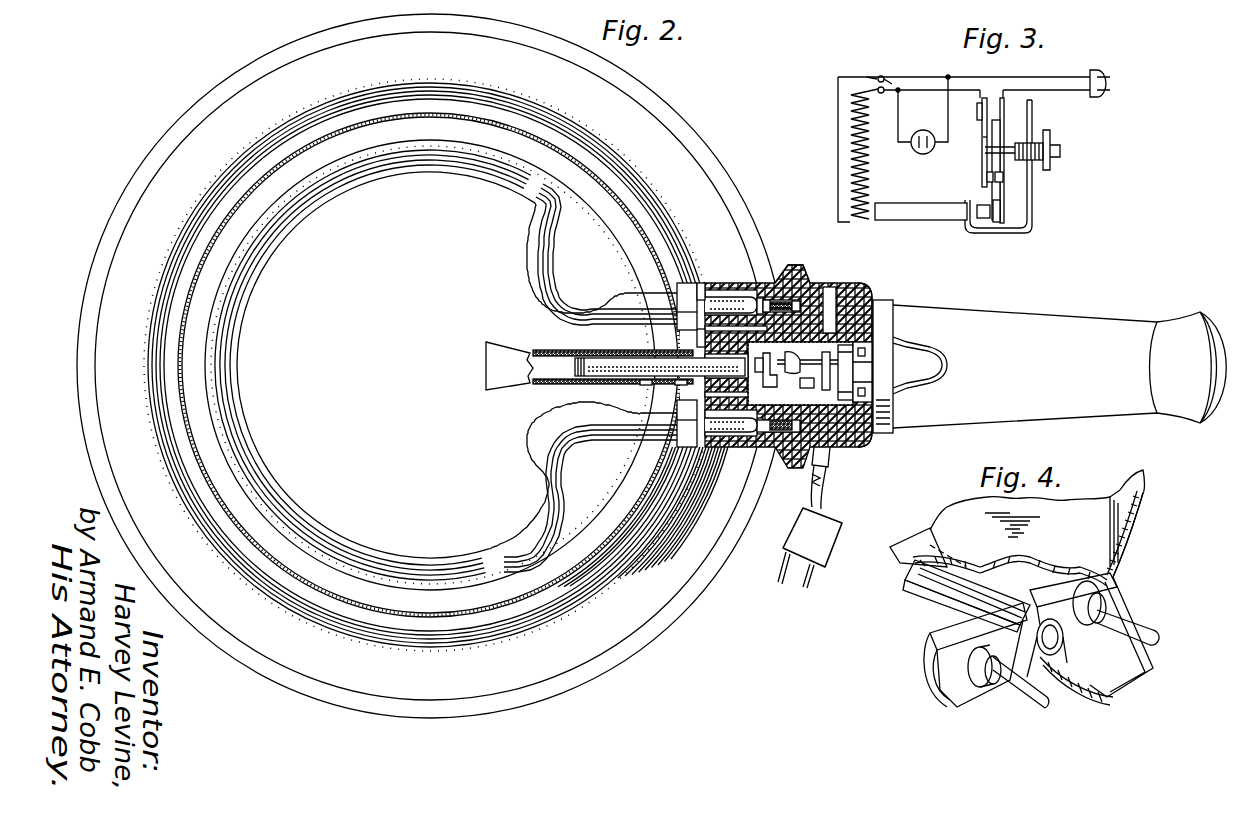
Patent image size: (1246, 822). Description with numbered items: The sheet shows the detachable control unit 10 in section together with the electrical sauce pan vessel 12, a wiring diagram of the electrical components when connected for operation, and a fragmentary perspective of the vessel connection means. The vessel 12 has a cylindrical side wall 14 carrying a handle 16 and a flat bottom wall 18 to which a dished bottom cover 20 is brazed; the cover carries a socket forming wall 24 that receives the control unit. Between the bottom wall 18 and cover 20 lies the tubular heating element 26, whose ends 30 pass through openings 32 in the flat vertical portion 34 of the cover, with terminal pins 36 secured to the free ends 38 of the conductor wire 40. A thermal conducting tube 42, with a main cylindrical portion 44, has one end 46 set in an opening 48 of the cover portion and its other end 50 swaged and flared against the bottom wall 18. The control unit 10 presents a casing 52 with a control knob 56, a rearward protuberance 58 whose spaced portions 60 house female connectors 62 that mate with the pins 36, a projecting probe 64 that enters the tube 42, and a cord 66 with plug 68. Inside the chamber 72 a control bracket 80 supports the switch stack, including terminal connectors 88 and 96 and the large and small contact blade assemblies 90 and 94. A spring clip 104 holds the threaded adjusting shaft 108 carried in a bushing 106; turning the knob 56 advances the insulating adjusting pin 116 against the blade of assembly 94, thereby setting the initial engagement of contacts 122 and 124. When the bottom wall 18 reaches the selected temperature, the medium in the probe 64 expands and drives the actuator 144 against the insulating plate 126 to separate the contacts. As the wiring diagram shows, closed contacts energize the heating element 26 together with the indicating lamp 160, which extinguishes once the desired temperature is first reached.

In FIG. 2, the detachable control unit 10 is at (853, 290).
In FIG. 2, the cooking appliance vessel 12 is at (197, 100).
In FIG. 4, the cooking appliance vessel 12 is at (1140, 482).
In FIG. 2, the side wall 14 is at (165, 172).
In FIG. 4, the side wall 14 is at (1146, 496).
In FIG. 2, the handle 16 is at (1072, 319).
In FIG. 2, the bottom wall 18 is at (296, 165).
In FIG. 4, the bottom wall 18 is at (965, 507).
In FIG. 2, the bottom cover 20 is at (200, 253).
In FIG. 4, the bottom cover 20 is at (927, 677).
In FIG. 4, the socket forming wall 24 is at (1133, 600).
In FIG. 2, the heating element 26 is at (547, 214).
In FIG. 3, the heating element 26 is at (870, 163).
In FIG. 2, the heating element ends 30 is at (665, 296).
In FIG. 4, the heating element ends 30 is at (1050, 577).
In FIG. 2, the openings 32 is at (682, 320).
In FIG. 2, the vertical portion 34 is at (678, 340).
In FIG. 4, the vertical portion 34 is at (975, 698).
In FIG. 2, the electrical terminal pins 36 is at (757, 285).
In FIG. 3, the electrical terminal pins 36 is at (870, 76).
In FIG. 4, the electrical terminal pins 36 is at (1040, 702).
In FIG. 2, the free ends 38 is at (747, 447).
In FIG. 2, the electrical conductor wire 40 is at (662, 438).
In FIG. 2, the thermal conducting tube 42 is at (563, 384).
In FIG. 4, the thermal conducting tube 42 is at (940, 585).
In FIG. 2, the main cylindrical portion 44 is at (598, 359).
In FIG. 4, the main cylindrical portion 44 is at (935, 602).
In FIG. 2, the tube end 46 is at (650, 386).
In FIG. 4, the tube end 46 is at (1066, 683).
In FIG. 2, the opening 48 is at (688, 386).
In FIG. 4, the opening 48 is at (1048, 650).
In FIG. 2, the swaged end 50 is at (486, 357).
In FIG. 4, the swaged end 50 is at (918, 537).
In FIG. 2, the casing 52 is at (864, 447).
In FIG. 2, the control knob 56 is at (923, 356).
In FIG. 3, the control knob 56 is at (1062, 150).
In FIG. 2, the rearward protuberance 58 is at (767, 329).
In FIG. 2, the laterally spaced portions 60 is at (707, 285).
In FIG. 2, the female electrical connectors 62 is at (733, 285).
In FIG. 3, the female electrical connectors 62 is at (886, 78).
In FIG. 2, the probe 64 is at (600, 352).
In FIG. 3, the probe 64 is at (940, 214).
In FIG. 2, the electrical cord 66 is at (828, 503).
In FIG. 2, the electrical plug 68 is at (828, 546).
In FIG. 3, the electrical plug 68 is at (1100, 73).
In FIG. 2, the internal chamber 72 is at (806, 276).
In FIG. 2, the control bracket 80 is at (871, 300).
In FIG. 3, the control bracket 80 is at (1033, 213).
In FIG. 2, the flat electrical terminal connector 88 is at (857, 450).
In FIG. 3, the flat electrical terminal connector 88 is at (1005, 100).
In FIG. 2, the large contact blade assembly 90 is at (822, 388).
In FIG. 3, the large contact blade assembly 90 is at (1000, 128).
In FIG. 2, the small contact blade assembly 94 is at (790, 382).
In FIG. 3, the small contact blade assembly 94 is at (982, 136).
In FIG. 2, the flat electrical terminal connector 96 is at (829, 290).
In FIG. 3, the flat electrical terminal connector 96 is at (982, 102).
In FIG. 2, the spring clip 104 is at (890, 340).
In FIG. 2, the internally threaded bushing 106 is at (829, 452).
In FIG. 2, the adjusting shaft 108 is at (883, 398).
In FIG. 3, the adjusting shaft 108 is at (1040, 138).
In FIG. 2, the adjusting pin 116 is at (797, 364).
In FIG. 3, the adjusting pin 116 is at (993, 151).
In FIG. 3, the electrical contact 122 is at (1003, 177).
In FIG. 3, the electrical contact 124 is at (987, 177).
In FIG. 2, the plate 126 is at (802, 388).
In FIG. 3, the plate 126 is at (997, 223).
In FIG. 2, the actuator 144 is at (766, 365).
In FIG. 3, the actuator 144 is at (983, 219).
In FIG. 3, the indicating lamp 160 is at (923, 154).